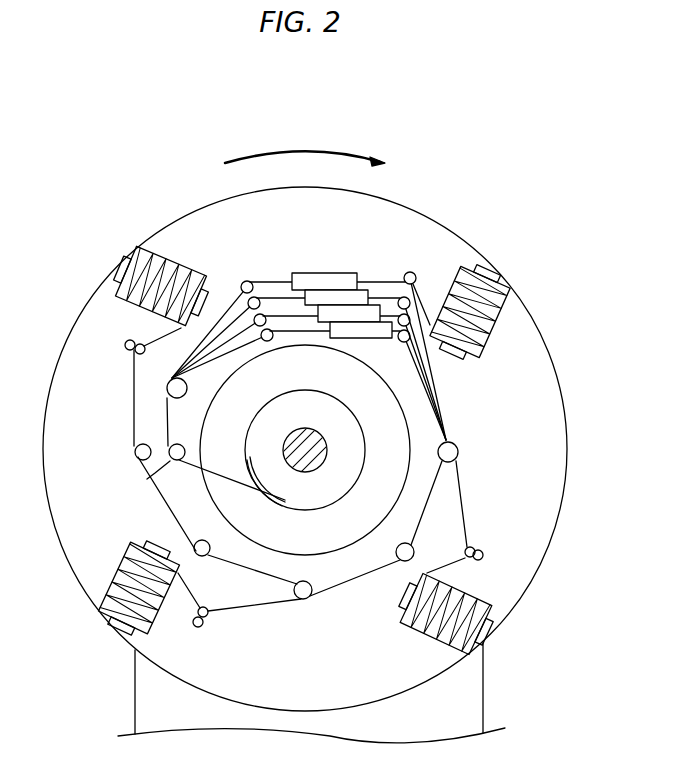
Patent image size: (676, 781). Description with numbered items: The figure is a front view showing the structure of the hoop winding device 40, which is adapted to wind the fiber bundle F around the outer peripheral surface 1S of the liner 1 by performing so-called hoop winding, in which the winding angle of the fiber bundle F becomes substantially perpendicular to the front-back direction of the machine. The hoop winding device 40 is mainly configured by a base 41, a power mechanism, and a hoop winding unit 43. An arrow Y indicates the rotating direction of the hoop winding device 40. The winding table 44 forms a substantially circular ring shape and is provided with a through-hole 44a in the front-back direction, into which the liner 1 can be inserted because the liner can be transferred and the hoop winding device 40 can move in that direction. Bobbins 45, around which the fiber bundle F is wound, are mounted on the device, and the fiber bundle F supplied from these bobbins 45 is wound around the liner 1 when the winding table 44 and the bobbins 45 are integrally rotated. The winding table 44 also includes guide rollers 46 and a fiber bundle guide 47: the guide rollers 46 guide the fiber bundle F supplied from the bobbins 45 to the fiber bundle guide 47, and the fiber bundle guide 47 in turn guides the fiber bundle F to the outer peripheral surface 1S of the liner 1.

The hoop winding device 40 is at (524, 116).
The hoop winding unit 43 is at (466, 181).
The winding table 44 is at (402, 207).
The through-hole 44a is at (353, 358).
The liner 1 is at (377, 442).
The outer peripheral surface 1S is at (363, 466).
The base 41 is at (485, 708).
The bobbins 45 is at (122, 283).
The guide rollers 46 is at (135, 450).
The fiber bundle guide 47 is at (147, 480).
The fiber bundle F is at (446, 400).
The rotating direction arrow Y is at (305, 147).